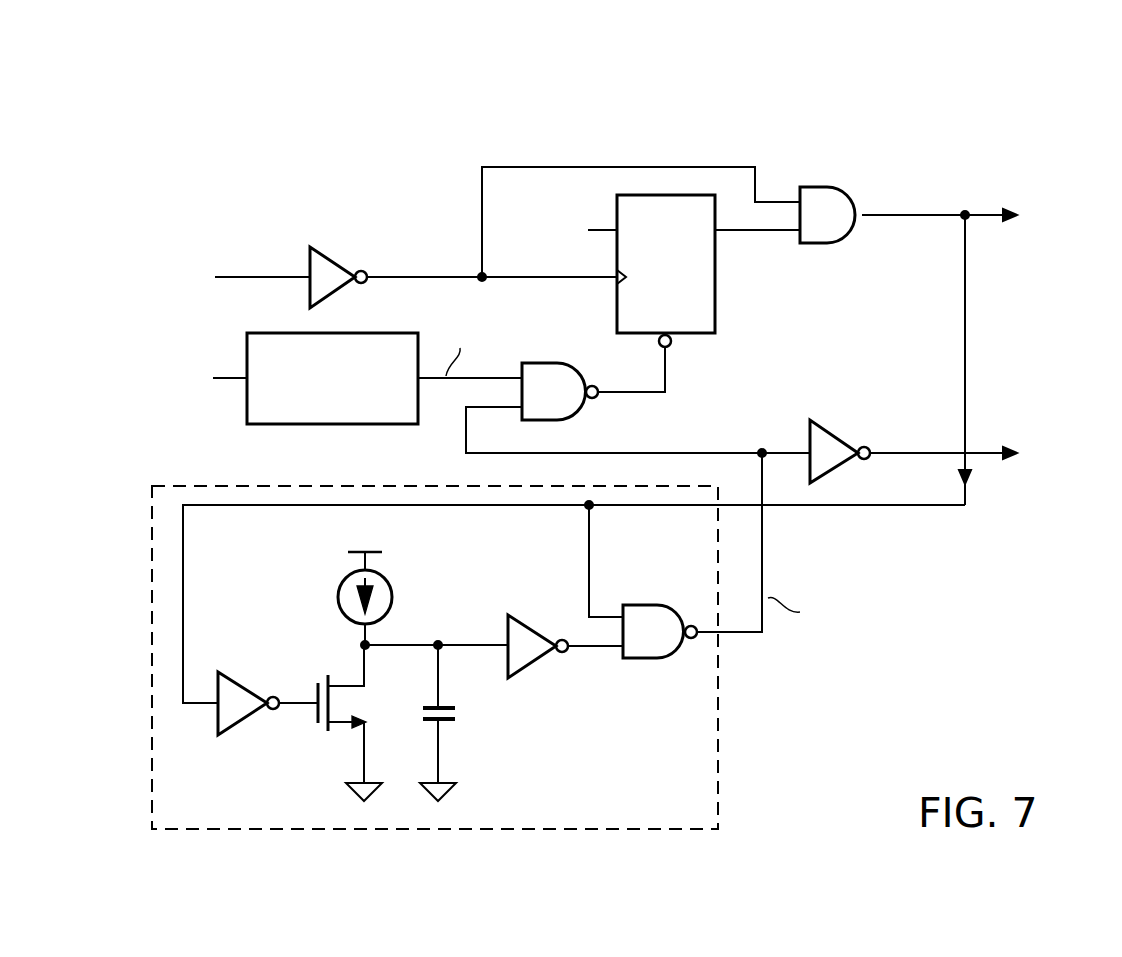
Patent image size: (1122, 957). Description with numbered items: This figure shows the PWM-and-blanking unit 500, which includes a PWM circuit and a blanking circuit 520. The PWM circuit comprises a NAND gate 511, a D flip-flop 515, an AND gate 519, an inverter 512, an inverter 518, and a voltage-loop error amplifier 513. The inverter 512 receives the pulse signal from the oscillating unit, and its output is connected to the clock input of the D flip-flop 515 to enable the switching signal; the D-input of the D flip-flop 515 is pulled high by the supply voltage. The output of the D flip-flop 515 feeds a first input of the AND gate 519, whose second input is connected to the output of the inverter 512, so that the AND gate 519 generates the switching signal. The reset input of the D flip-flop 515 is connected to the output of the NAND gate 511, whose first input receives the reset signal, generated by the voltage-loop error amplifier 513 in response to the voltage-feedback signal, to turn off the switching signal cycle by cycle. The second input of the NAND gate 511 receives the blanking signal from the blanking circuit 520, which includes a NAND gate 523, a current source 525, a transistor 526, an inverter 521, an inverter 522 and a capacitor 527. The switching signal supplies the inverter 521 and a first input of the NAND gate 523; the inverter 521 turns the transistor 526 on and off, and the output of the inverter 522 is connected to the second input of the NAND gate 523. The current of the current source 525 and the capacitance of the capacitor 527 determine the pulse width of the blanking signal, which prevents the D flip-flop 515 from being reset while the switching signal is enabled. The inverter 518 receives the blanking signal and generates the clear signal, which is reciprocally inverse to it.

The PWM-and-blanking unit 500 is at (1088, 90).
The NAND gate 511 is at (547, 350).
The inverter 512 is at (336, 250).
The voltage-loop error amplifier 513 is at (332, 425).
The D flip-flop 515 is at (715, 316).
The inverter 518 is at (835, 425).
The AND gate 519 is at (822, 247).
The blanking circuit 520 is at (150, 552).
The inverter 521 is at (240, 680).
The inverter 522 is at (530, 620).
The NAND gate 523 is at (643, 665).
The current source 525 is at (393, 590).
The transistor 526 is at (320, 735).
The capacitor 527 is at (460, 708).